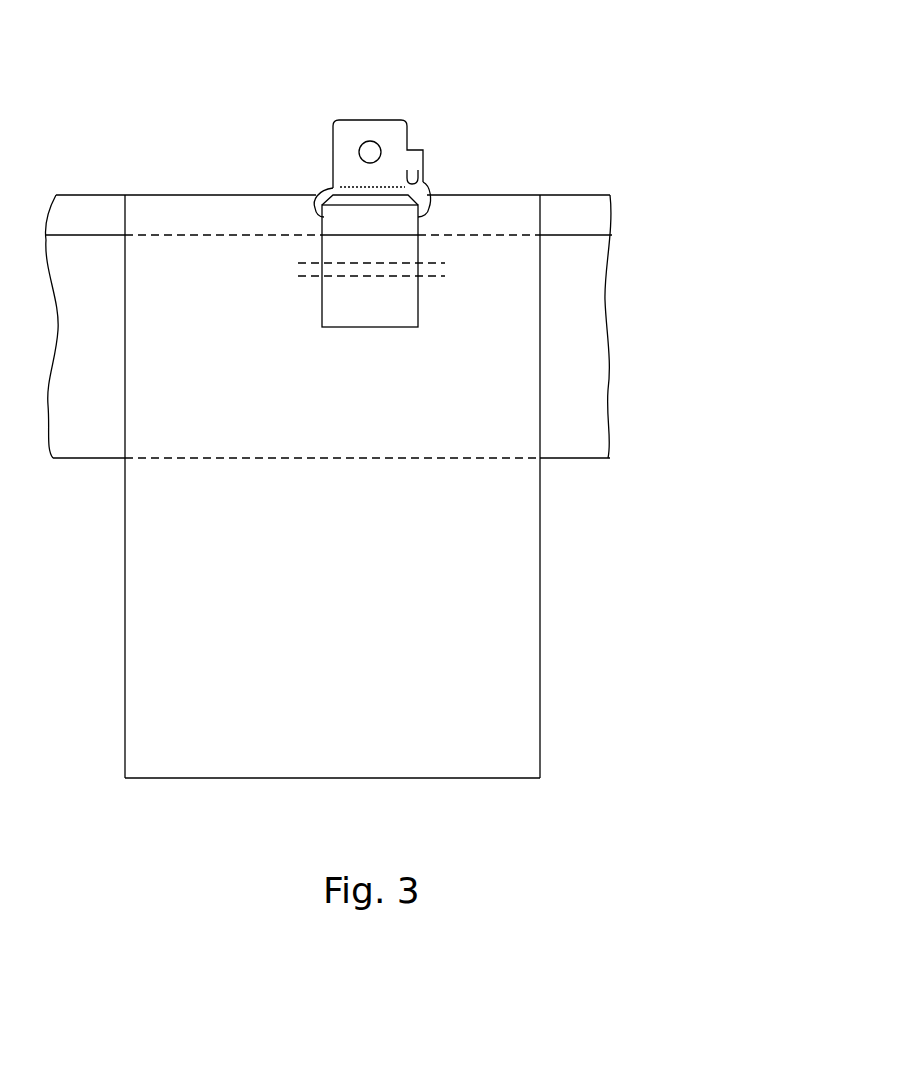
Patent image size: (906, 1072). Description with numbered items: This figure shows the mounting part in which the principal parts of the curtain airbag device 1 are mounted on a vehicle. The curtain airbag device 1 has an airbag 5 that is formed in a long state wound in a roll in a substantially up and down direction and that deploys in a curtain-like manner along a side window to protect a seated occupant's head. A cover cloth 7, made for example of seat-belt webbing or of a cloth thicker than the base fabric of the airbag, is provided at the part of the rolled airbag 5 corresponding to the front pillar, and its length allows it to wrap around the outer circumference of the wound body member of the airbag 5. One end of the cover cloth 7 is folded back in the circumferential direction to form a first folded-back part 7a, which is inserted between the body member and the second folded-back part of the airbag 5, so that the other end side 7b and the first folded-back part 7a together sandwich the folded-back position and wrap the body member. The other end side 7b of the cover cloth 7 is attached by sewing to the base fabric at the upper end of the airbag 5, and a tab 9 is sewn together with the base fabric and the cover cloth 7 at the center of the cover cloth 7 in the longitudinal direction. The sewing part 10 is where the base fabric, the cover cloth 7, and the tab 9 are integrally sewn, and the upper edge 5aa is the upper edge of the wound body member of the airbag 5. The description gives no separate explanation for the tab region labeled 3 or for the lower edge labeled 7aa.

The curtain airbag device 1 is at (486, 92).
The terminal clip 3 is at (386, 130).
The airbag 5 is at (598, 422).
The upper edge of the body member 5aa is at (598, 216).
The cover cloth 7 is at (520, 480).
The first folded-back part 7a is at (525, 645).
The other end side 7b is at (500, 347).
The bottom edge of cell 7aa is at (508, 780).
The tab 9 is at (403, 218).
The sewing part 10 is at (436, 256).